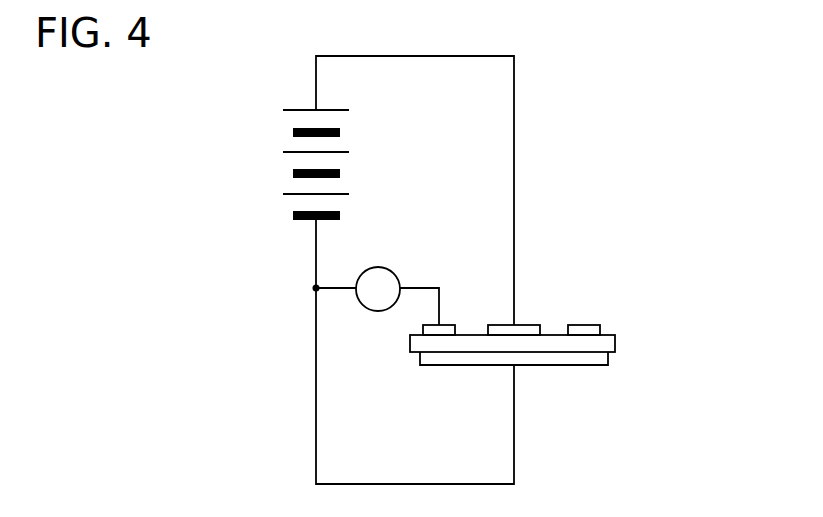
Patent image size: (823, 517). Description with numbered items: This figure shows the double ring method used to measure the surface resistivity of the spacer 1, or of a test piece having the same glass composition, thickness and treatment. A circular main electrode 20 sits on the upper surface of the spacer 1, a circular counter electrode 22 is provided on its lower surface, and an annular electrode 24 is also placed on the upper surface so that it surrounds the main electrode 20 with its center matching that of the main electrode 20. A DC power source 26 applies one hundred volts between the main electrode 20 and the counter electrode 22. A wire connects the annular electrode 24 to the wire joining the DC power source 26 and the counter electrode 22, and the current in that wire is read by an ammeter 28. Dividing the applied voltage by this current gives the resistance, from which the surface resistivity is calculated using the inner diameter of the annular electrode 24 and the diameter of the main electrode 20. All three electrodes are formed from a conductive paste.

The spacer 1 is at (612, 350).
The main electrode 20 is at (505, 323).
The counter electrode 22 is at (570, 365).
The annular electrode 24 is at (443, 322).
The DC power source 26 is at (282, 156).
The ammeter 28 is at (388, 267).